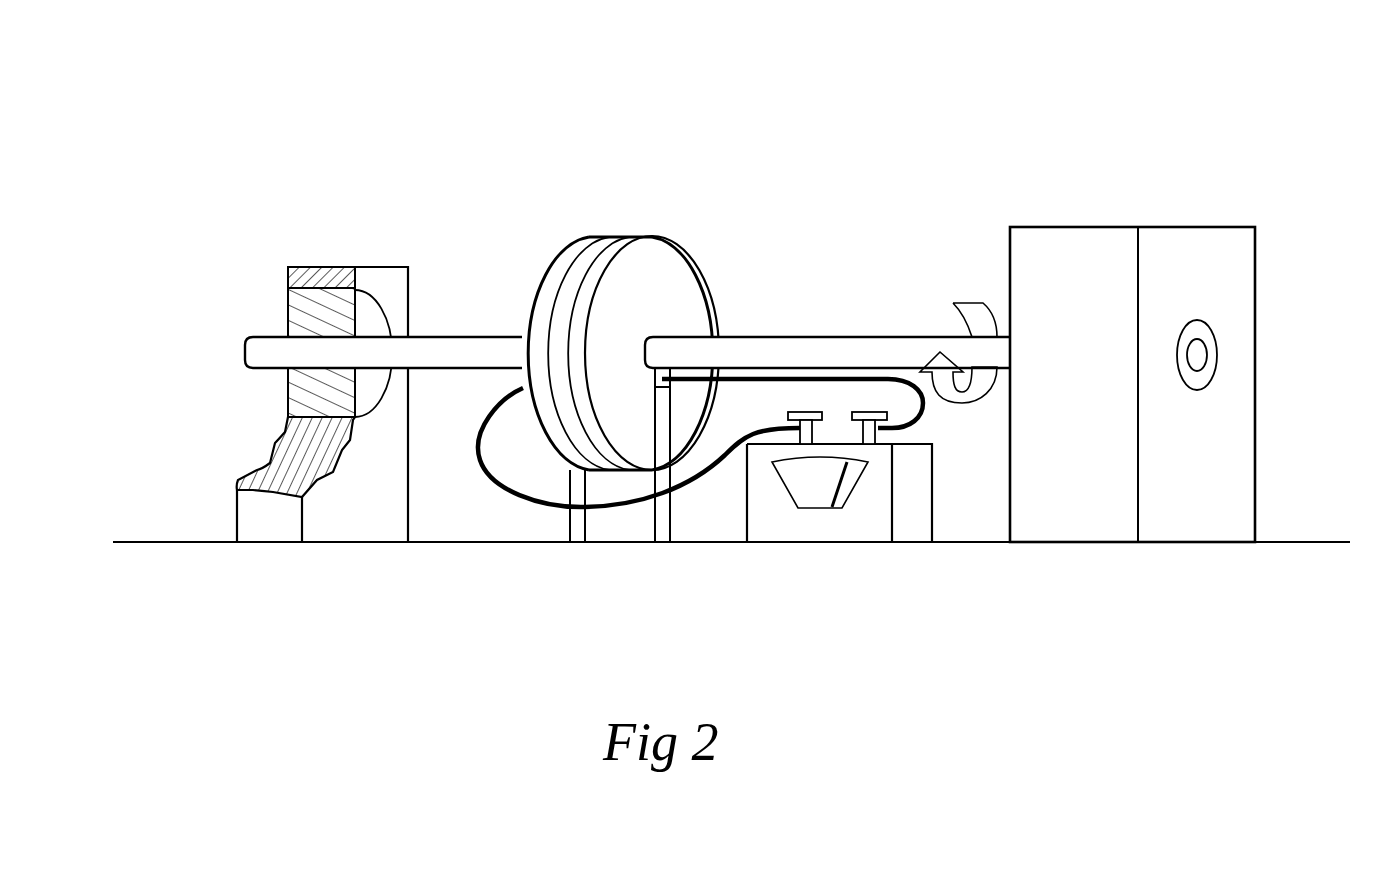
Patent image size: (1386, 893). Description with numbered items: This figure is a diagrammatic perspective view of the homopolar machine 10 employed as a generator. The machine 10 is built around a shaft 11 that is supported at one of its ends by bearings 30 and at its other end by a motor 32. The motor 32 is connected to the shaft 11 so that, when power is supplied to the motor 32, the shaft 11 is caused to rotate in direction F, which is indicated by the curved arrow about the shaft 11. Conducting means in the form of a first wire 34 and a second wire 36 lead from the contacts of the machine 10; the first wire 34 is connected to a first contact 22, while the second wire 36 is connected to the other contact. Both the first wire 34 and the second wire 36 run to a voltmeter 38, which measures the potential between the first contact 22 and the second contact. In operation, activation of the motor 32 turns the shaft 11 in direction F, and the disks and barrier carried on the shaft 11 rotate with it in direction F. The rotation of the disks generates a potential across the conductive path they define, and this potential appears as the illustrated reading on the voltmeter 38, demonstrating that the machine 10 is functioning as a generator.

The machine 10 is at (650, 187).
The shaft 11 is at (447, 336).
The first contact 22 is at (664, 372).
The bearings 30 is at (287, 388).
The motor 32 is at (1257, 330).
The first wire 34 is at (843, 378).
The second wire 36 is at (545, 507).
The voltmeter 38 is at (830, 530).
The direction of rotation F is at (972, 303).